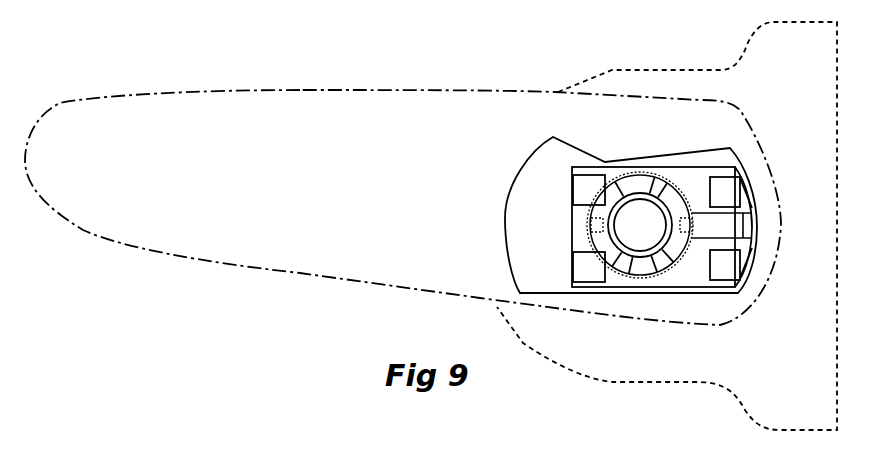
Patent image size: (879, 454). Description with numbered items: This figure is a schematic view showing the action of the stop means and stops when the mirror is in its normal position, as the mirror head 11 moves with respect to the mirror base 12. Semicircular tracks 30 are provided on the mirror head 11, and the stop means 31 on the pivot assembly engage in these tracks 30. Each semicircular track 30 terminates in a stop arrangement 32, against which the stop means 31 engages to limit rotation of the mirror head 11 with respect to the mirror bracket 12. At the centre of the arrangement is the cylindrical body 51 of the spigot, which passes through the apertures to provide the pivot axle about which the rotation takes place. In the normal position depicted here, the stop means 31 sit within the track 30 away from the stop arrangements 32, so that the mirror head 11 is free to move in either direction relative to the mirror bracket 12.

The mirror head 11 is at (313, 212).
The mirror base 12 is at (775, 370).
The semicircular track 30 is at (608, 262).
The stop means 31 is at (590, 226).
The stop arrangement 32 is at (661, 185).
The cylindrical body 51 is at (628, 193).